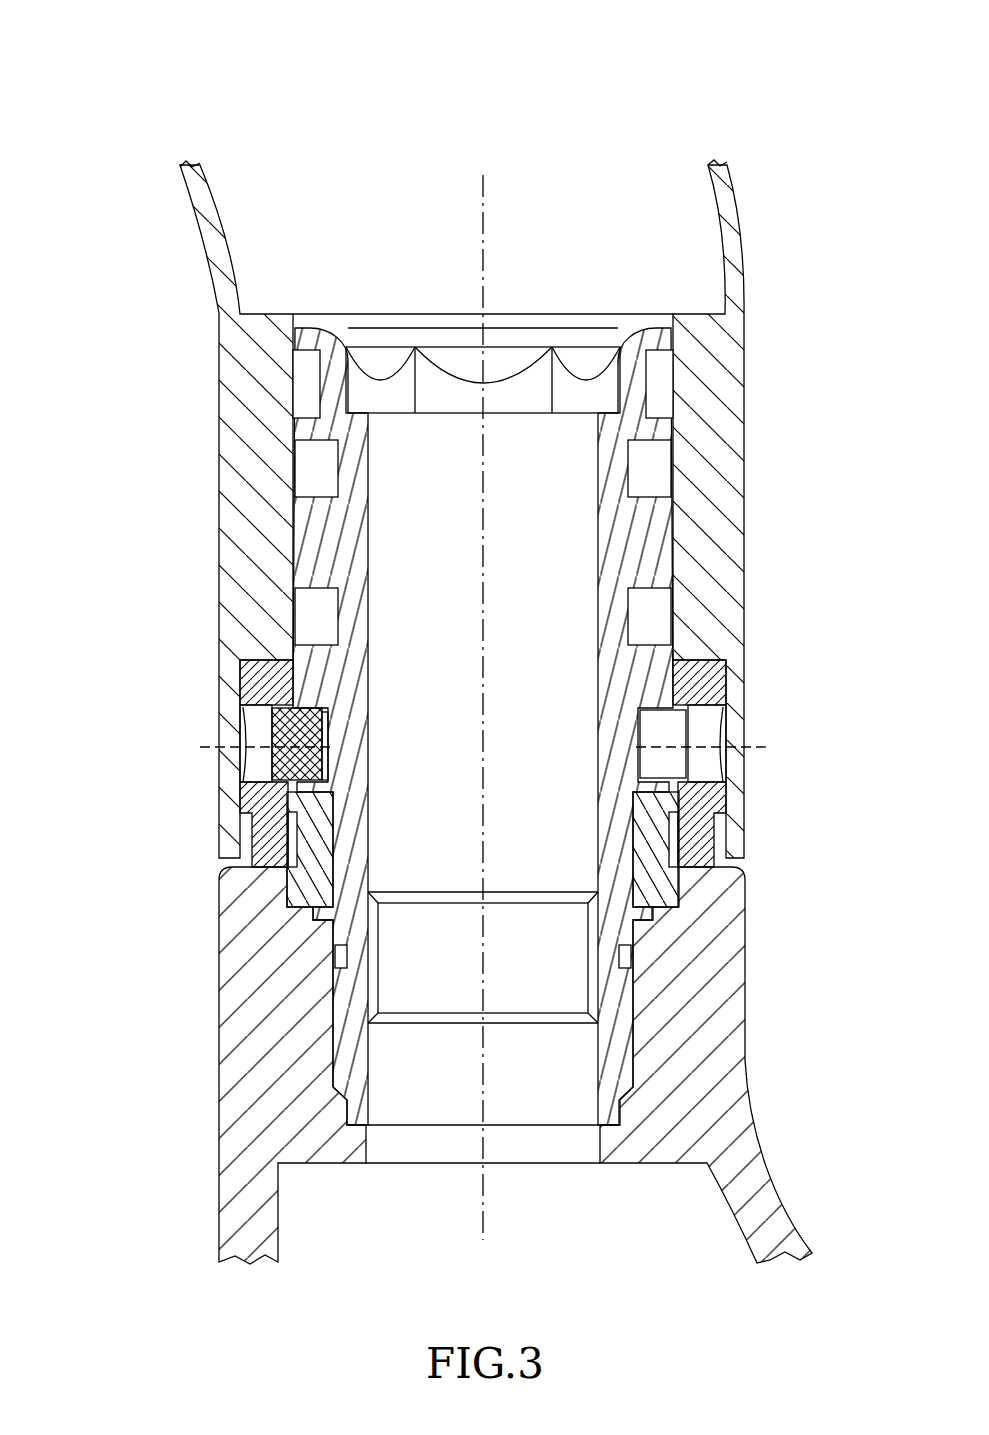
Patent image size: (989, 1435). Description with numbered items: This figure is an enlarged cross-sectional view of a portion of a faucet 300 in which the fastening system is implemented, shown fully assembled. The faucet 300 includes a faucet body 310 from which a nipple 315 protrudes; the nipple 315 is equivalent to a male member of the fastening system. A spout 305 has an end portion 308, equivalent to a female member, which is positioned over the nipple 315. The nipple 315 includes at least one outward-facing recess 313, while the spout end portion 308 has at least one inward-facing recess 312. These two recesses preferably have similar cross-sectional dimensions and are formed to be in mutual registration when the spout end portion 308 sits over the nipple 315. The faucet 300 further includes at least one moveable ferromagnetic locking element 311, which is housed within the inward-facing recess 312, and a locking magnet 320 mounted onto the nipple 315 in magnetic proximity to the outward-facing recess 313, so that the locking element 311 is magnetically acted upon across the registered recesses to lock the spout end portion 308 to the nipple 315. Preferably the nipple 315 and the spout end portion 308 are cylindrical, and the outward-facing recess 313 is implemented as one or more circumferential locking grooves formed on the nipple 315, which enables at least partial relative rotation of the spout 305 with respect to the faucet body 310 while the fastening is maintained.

The faucet 300 is at (138, 50).
The spout 305 is at (401, 267).
The end portion 308 is at (715, 452).
The faucet body 310 is at (253, 1058).
The moveable ferromagnetic locking element 311 is at (277, 725).
The inward-facing recess 312 is at (255, 762).
The outward-facing recess 313 is at (655, 737).
The nipple 315 is at (315, 538).
The locking magnet 320 is at (455, 960).